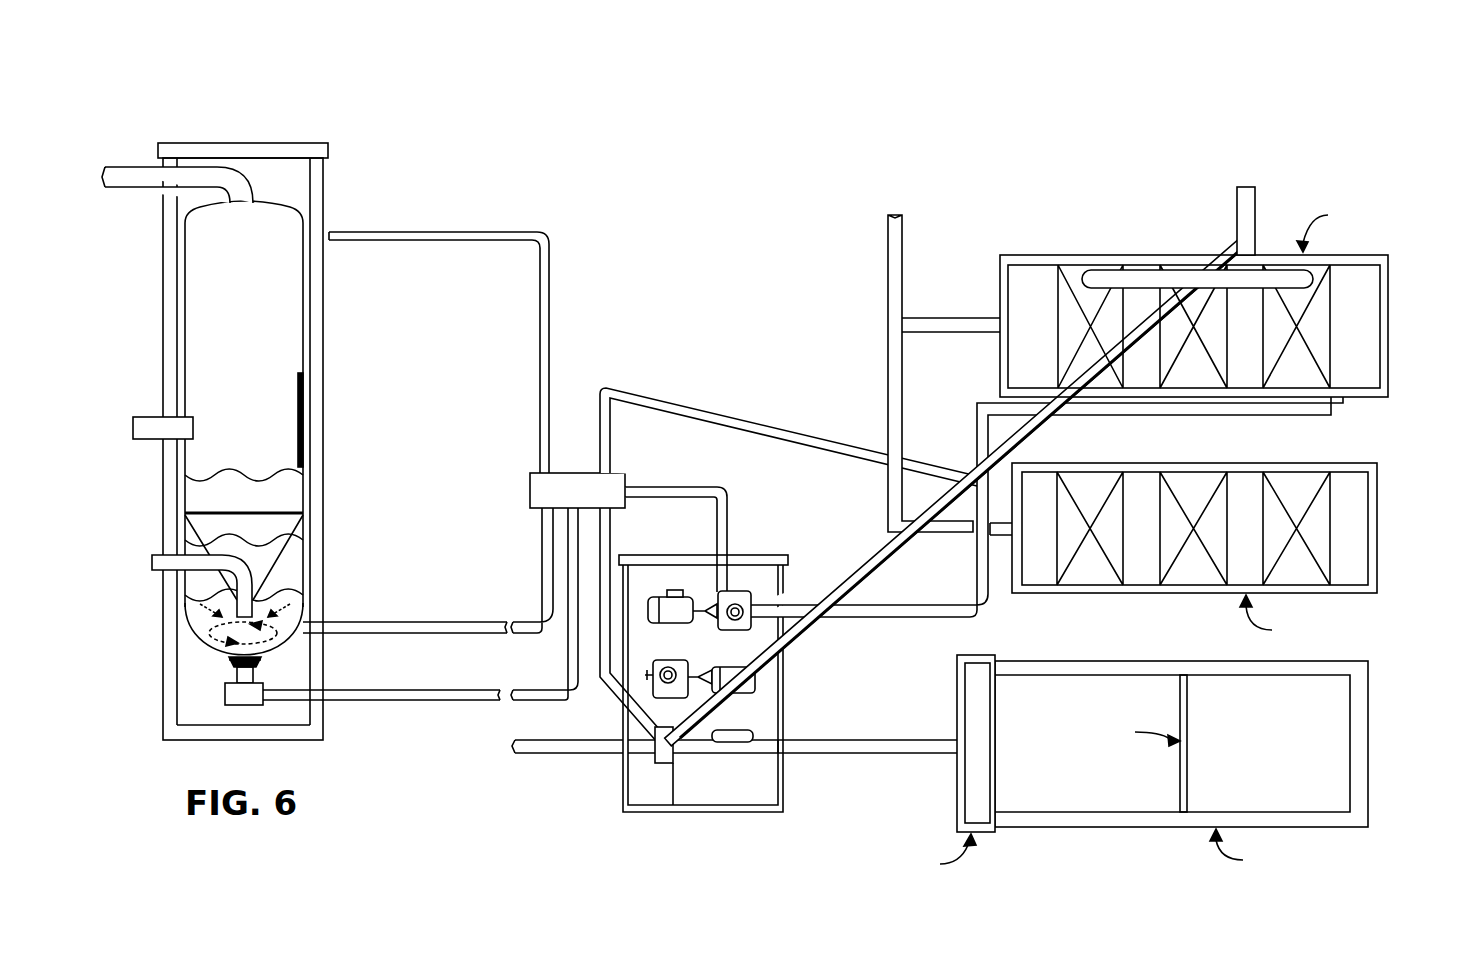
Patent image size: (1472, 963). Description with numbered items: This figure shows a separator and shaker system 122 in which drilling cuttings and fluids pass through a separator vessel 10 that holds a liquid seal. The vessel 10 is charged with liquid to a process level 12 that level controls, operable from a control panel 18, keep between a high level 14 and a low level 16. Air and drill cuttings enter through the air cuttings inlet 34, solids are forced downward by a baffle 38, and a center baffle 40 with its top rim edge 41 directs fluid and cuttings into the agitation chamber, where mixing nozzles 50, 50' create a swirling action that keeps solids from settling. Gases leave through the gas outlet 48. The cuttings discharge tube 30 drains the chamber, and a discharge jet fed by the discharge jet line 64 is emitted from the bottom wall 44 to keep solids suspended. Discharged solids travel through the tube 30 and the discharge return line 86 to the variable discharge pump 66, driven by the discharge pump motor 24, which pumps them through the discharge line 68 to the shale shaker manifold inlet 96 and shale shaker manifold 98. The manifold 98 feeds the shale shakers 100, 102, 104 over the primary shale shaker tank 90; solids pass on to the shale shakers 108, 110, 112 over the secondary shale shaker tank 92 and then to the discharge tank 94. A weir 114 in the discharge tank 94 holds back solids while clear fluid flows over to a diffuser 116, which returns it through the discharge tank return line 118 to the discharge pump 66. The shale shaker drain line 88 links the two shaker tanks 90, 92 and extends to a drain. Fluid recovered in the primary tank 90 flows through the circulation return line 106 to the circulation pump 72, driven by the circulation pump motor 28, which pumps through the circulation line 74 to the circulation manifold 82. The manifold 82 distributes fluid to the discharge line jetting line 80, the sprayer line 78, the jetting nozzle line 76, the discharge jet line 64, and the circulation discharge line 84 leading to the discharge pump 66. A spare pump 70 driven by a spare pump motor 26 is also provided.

The separator vessel 10 is at (256, 202).
The process level 12 is at (298, 522).
The high level 14 is at (292, 476).
The low level 16 is at (300, 601).
The control panel 18 is at (705, 812).
The discharge pump motor 24 is at (784, 718).
The spare pump motor 26 is at (760, 732).
The circulation pump motor 28 is at (650, 597).
The cuttings discharge tube 30 is at (152, 562).
The air cuttings inlet 34 is at (132, 426).
The baffle 38 is at (298, 386).
The center baffle 40 is at (295, 574).
The top rim edge 41 is at (302, 509).
The bottom wall 44 is at (225, 649).
The gas outlet 48 is at (142, 167).
The mixing nozzle 50 is at (201, 618).
The mixing nozzle 50' is at (279, 653).
The discharge jet line 64 is at (406, 701).
The variable discharge pump 66 is at (655, 761).
The discharge line 68 is at (852, 584).
The spare pump 70 is at (672, 660).
The circulation pump 72 is at (745, 591).
The circulation line 74 is at (675, 490).
The jetting nozzle line 76 is at (425, 623).
The sprayer line 78 is at (435, 234).
The discharge line jetting line 80 is at (723, 416).
The circulation manifold 82 is at (530, 484).
The circulation discharge line 84 is at (618, 690).
The discharge return line 86 is at (547, 753).
The shale shaker drain line 88 is at (888, 297).
The primary shale shaker tank 90 is at (1230, 308).
The secondary shale shaker tank 92 is at (1226, 558).
The discharge tank 94 is at (1217, 767).
The shale shaker manifold inlet 96 is at (1237, 206).
The shale shaker manifold 98 is at (1148, 266).
The shale shaker 100 is at (1138, 370).
The shale shaker 102 is at (1232, 360).
The shale shaker 104 is at (1332, 336).
The circulation return line 106 is at (910, 619).
The shale shaker 108 is at (1055, 578).
The shale shaker 110 is at (1168, 580).
The shale shaker 112 is at (1330, 562).
The weir 114 is at (1185, 776).
The diffuser 116 is at (983, 833).
The discharge tank return line 118 is at (872, 754).
The separator and shaker system 122 is at (975, 112).